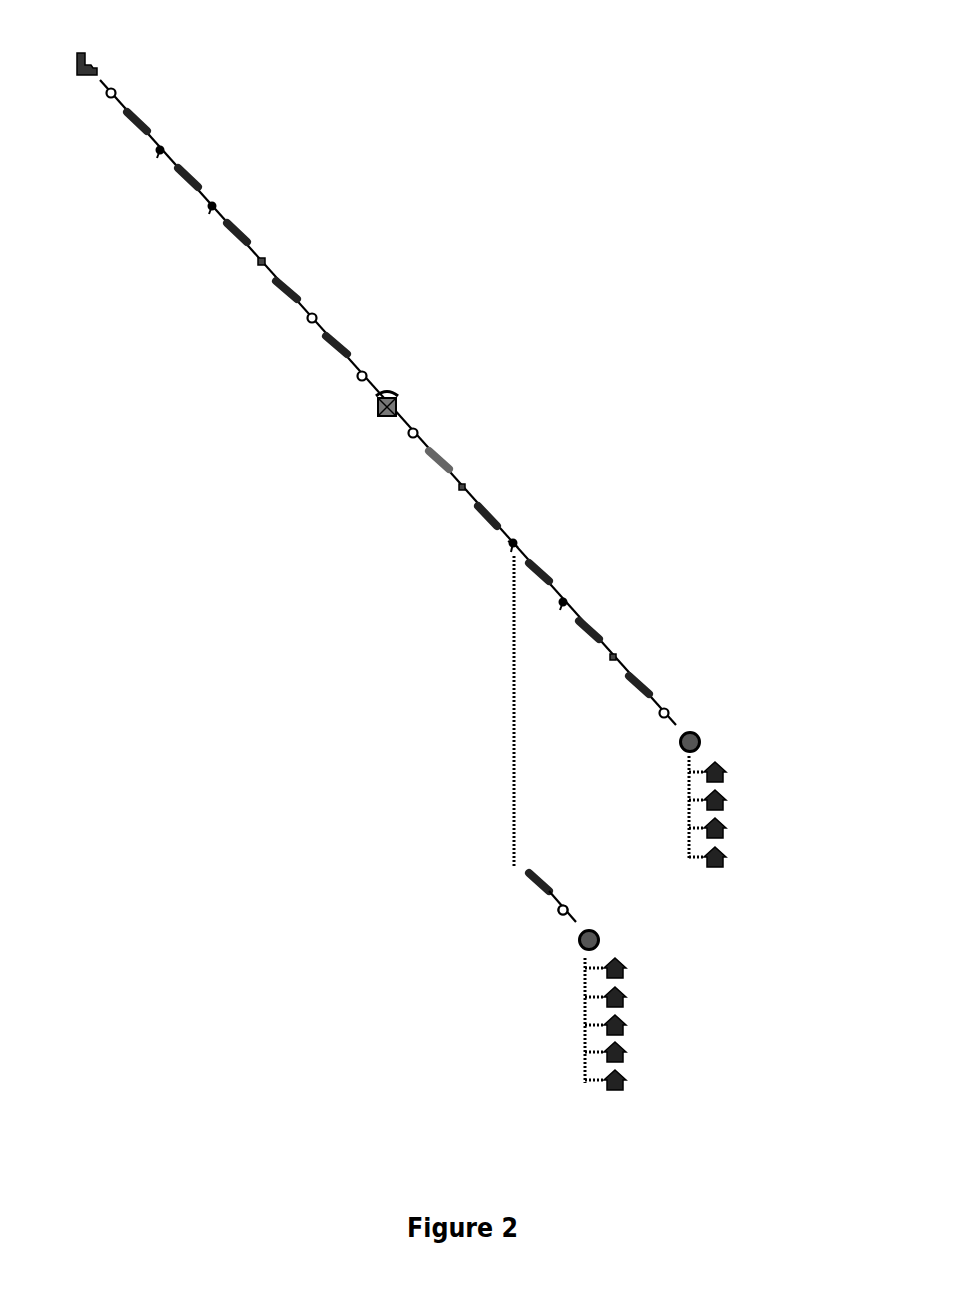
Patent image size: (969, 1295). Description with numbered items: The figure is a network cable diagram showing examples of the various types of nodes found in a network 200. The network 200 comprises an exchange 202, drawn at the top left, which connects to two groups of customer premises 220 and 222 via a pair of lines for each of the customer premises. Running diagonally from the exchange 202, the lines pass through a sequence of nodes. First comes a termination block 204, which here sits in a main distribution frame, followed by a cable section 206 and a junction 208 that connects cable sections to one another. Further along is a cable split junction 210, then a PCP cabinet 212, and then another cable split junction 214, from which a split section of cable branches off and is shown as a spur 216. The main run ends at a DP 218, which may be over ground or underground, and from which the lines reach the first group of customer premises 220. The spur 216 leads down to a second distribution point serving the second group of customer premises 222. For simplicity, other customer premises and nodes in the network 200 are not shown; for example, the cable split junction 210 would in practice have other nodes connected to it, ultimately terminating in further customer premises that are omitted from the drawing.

The network 200 is at (388, 515).
The exchange 202 is at (102, 48).
The termination block 204 is at (103, 102).
The cable section 206 is at (135, 130).
The junction 208 is at (243, 264).
The cable split junction 210 is at (202, 215).
The PCP cabinet 212 is at (365, 417).
The cable split junction 214 is at (495, 545).
The spur 216 is at (500, 695).
The DP 218 is at (670, 737).
The group of customer premises 220 is at (730, 747).
The group of customer premises 222 is at (620, 953).